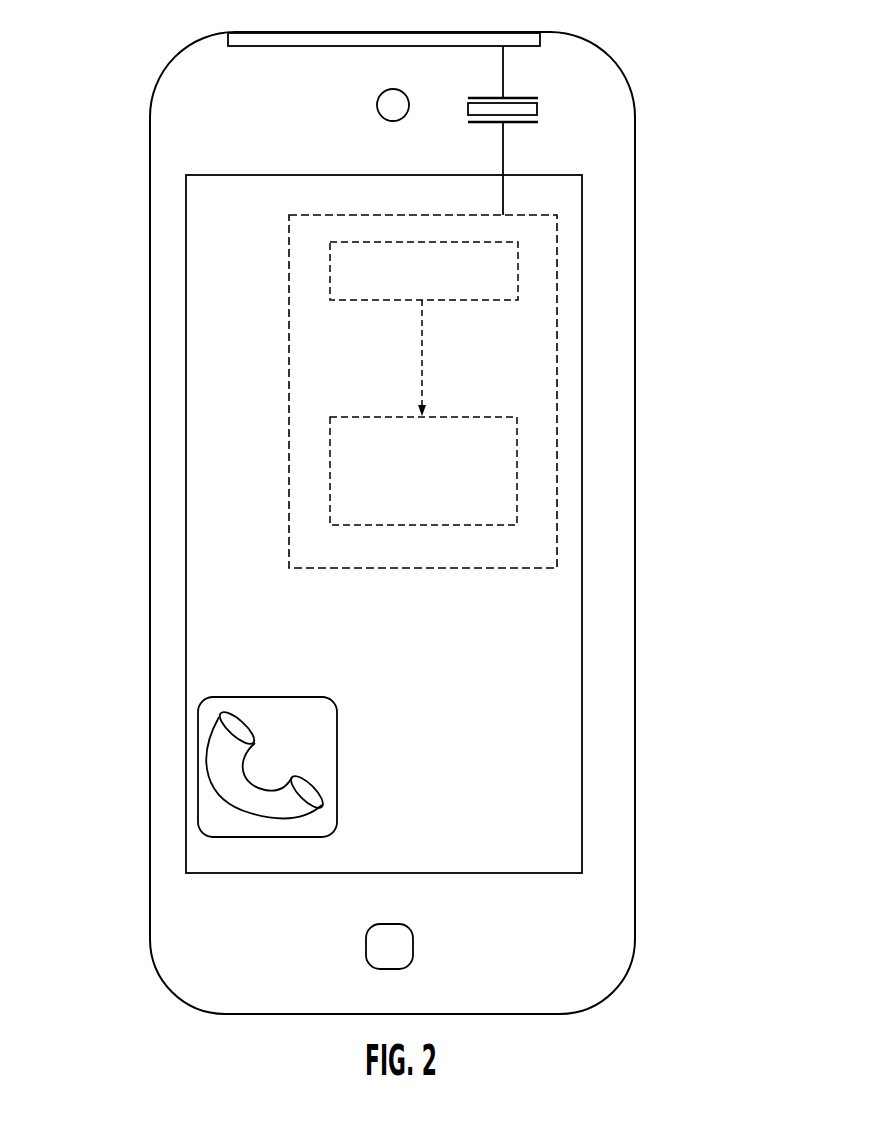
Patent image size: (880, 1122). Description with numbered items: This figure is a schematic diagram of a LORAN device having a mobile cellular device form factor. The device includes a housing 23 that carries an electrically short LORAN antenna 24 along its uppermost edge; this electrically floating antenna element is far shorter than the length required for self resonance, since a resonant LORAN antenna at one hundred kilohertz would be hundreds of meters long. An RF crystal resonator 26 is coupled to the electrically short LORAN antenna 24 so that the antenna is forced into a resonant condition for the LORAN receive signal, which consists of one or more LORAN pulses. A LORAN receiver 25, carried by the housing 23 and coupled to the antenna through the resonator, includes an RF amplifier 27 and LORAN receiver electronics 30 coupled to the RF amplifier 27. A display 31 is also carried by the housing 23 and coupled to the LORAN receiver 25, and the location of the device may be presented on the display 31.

The housing 23 is at (635, 813).
The electrically short LORAN antenna 24 is at (273, 47).
The LORAN receiver 25 is at (503, 391).
The RF crystal resonator 26 is at (540, 108).
The RF amplifier 27 is at (413, 297).
The LORAN receiver electronics 30 is at (433, 516).
The display 31 is at (540, 834).